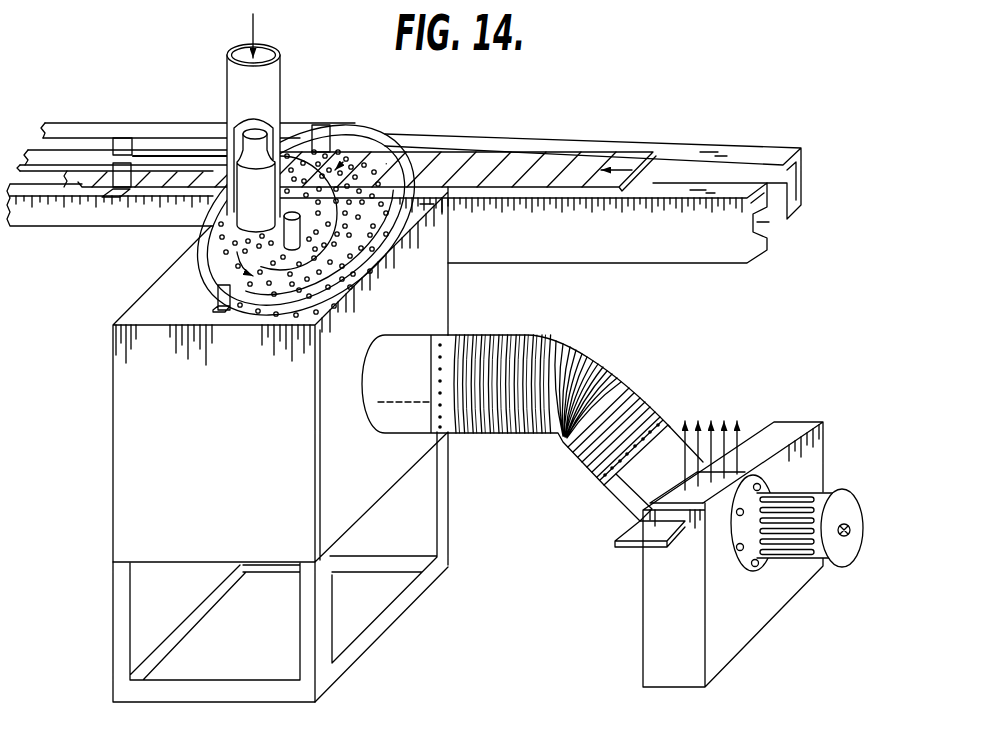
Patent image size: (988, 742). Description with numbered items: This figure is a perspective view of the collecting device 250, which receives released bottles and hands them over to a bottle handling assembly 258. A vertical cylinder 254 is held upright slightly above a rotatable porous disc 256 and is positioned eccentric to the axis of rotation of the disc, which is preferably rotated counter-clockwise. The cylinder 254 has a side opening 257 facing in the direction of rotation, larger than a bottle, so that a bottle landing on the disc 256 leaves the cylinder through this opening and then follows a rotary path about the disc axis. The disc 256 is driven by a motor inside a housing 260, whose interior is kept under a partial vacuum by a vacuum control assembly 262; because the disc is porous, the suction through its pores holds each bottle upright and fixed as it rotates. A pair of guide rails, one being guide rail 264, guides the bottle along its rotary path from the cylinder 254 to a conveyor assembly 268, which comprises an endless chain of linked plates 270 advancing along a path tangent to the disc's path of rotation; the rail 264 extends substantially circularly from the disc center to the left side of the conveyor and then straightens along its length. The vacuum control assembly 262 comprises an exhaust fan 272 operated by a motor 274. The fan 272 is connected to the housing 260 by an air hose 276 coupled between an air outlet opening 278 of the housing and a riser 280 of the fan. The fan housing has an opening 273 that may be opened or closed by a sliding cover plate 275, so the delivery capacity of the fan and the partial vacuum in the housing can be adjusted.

The collecting device 250 is at (76, 329).
The vertical cylinder 254 is at (281, 77).
The rotatable porous disc 256 is at (199, 241).
The side opening 257 is at (235, 130).
The bottle handling assembly 258 is at (146, 450).
The housing 260 is at (130, 540).
The vacuum control assembly 262 is at (319, 284).
The guide rail 264 is at (362, 221).
The conveyor assembly 268 is at (567, 148).
The endless chain of linked plates 270 is at (480, 162).
The exhaust fan 272 is at (662, 660).
The opening 273 is at (764, 465).
The motor 274 is at (797, 549).
The sliding cover plate 275 is at (664, 534).
The air hose 276 is at (600, 374).
The air outlet opening 278 is at (367, 404).
The riser 280 is at (611, 514).